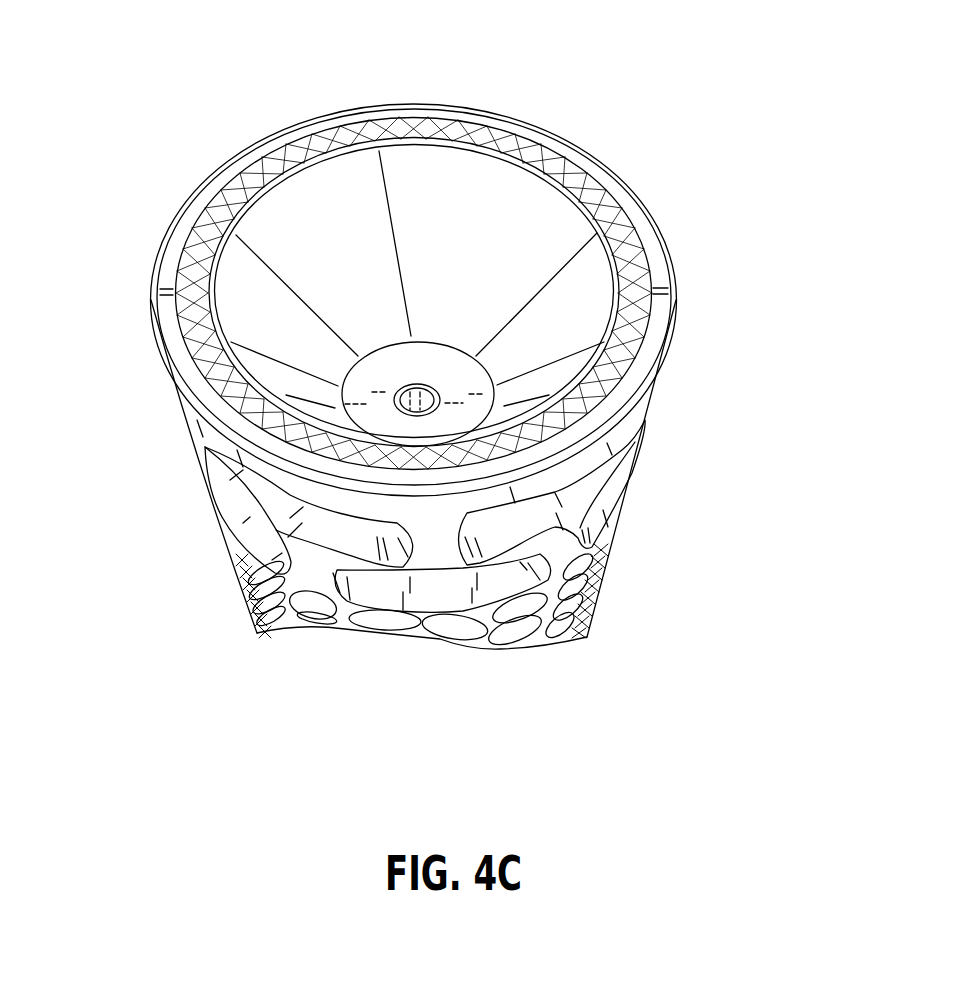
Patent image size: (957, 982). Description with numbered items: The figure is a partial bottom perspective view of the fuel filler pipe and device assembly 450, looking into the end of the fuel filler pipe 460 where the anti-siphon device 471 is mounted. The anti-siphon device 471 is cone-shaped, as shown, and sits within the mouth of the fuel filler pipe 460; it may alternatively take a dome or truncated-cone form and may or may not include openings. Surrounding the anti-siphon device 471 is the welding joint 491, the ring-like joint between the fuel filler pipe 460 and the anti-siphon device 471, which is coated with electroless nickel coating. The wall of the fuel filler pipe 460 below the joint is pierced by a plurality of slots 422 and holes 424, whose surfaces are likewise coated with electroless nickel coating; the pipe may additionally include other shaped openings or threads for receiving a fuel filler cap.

The fuel filler pipe and device assembly 450 is at (826, 80).
The fuel filler pipe 460 is at (648, 208).
The welding joint 491 is at (650, 326).
The anti-siphon device 471 is at (524, 263).
The slots 422 is at (607, 527).
The holes 424 is at (483, 648).